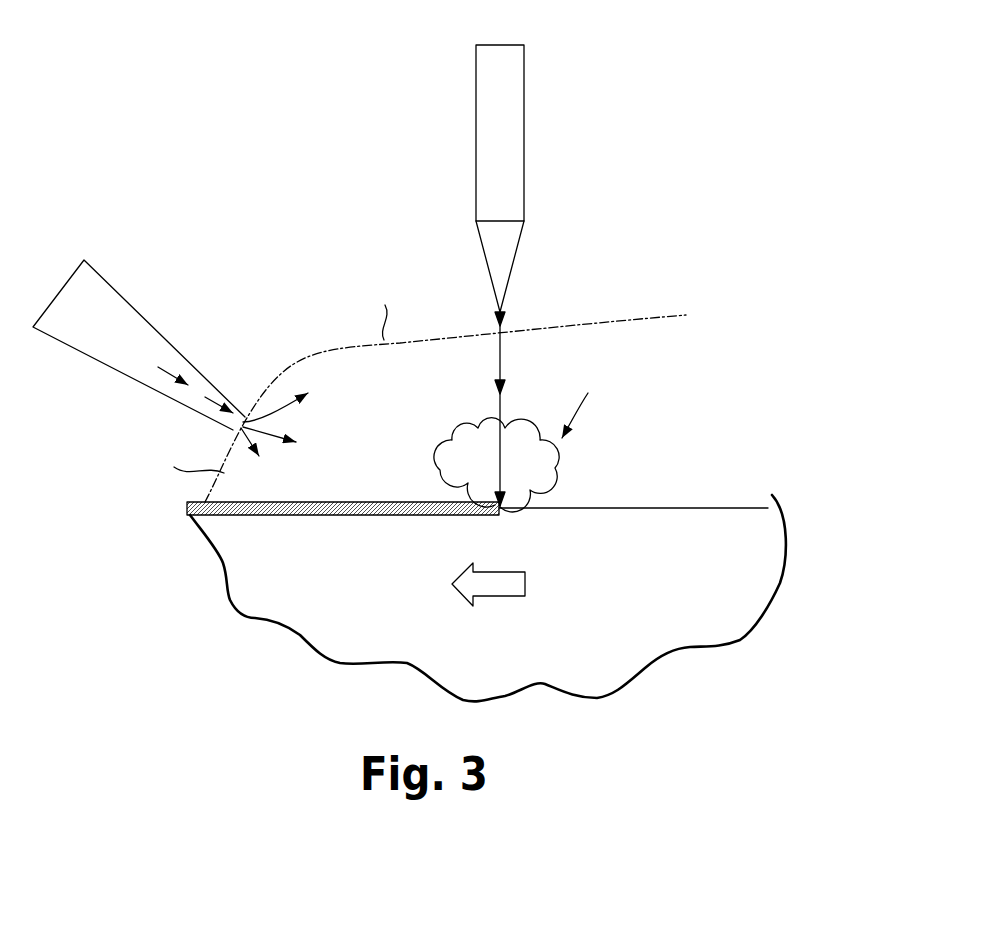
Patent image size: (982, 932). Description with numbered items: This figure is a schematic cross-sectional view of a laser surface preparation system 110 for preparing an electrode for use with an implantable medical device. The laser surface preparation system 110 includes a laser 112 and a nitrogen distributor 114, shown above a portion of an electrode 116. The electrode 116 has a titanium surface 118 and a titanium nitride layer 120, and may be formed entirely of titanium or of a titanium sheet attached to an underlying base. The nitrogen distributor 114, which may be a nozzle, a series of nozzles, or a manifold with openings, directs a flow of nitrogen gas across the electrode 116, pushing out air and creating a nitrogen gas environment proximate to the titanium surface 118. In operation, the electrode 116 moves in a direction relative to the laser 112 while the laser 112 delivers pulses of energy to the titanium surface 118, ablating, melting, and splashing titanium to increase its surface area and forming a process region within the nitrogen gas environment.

The laser surface preparation system 110 is at (212, 114).
The laser 112 is at (525, 80).
The nitrogen distributor 114 is at (132, 303).
The electrode 116 is at (746, 550).
The titanium surface 118 is at (727, 507).
The titanium nitride layer 120 is at (395, 502).